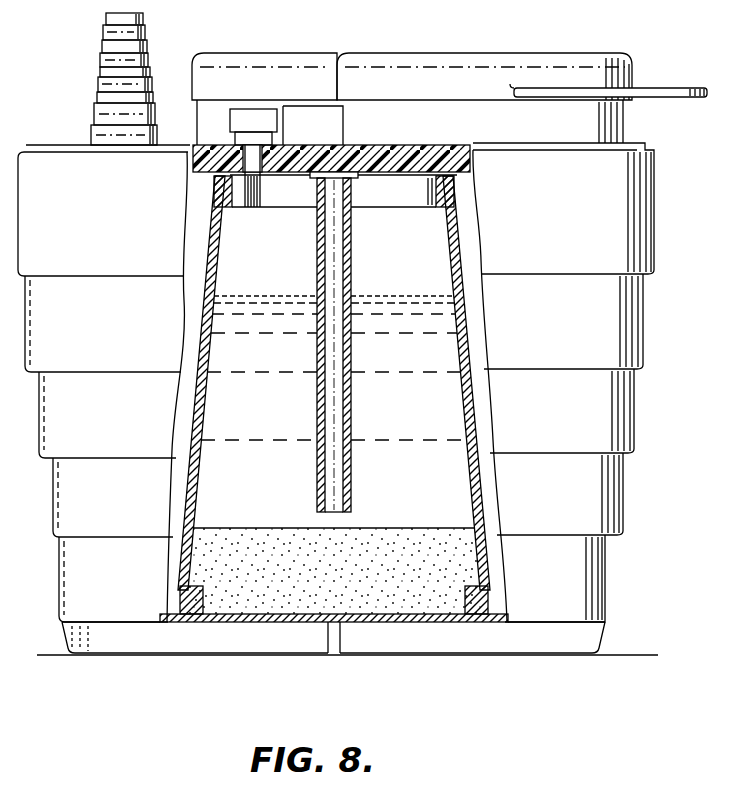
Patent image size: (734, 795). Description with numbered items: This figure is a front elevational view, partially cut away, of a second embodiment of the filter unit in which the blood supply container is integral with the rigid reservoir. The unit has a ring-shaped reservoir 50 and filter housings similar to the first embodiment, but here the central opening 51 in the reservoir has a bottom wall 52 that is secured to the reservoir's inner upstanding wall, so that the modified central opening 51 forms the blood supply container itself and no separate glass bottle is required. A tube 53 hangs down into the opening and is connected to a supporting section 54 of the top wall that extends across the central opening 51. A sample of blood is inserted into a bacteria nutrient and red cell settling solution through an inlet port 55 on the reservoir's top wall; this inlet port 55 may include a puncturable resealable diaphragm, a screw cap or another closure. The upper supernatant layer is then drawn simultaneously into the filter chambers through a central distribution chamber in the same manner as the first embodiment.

The ring-shaped reservoir 50 is at (648, 335).
The central opening 51 is at (282, 254).
The bottom wall 52 is at (379, 622).
The tube 53 is at (352, 487).
The supporting section 54 is at (393, 178).
The inlet port 55 is at (243, 142).